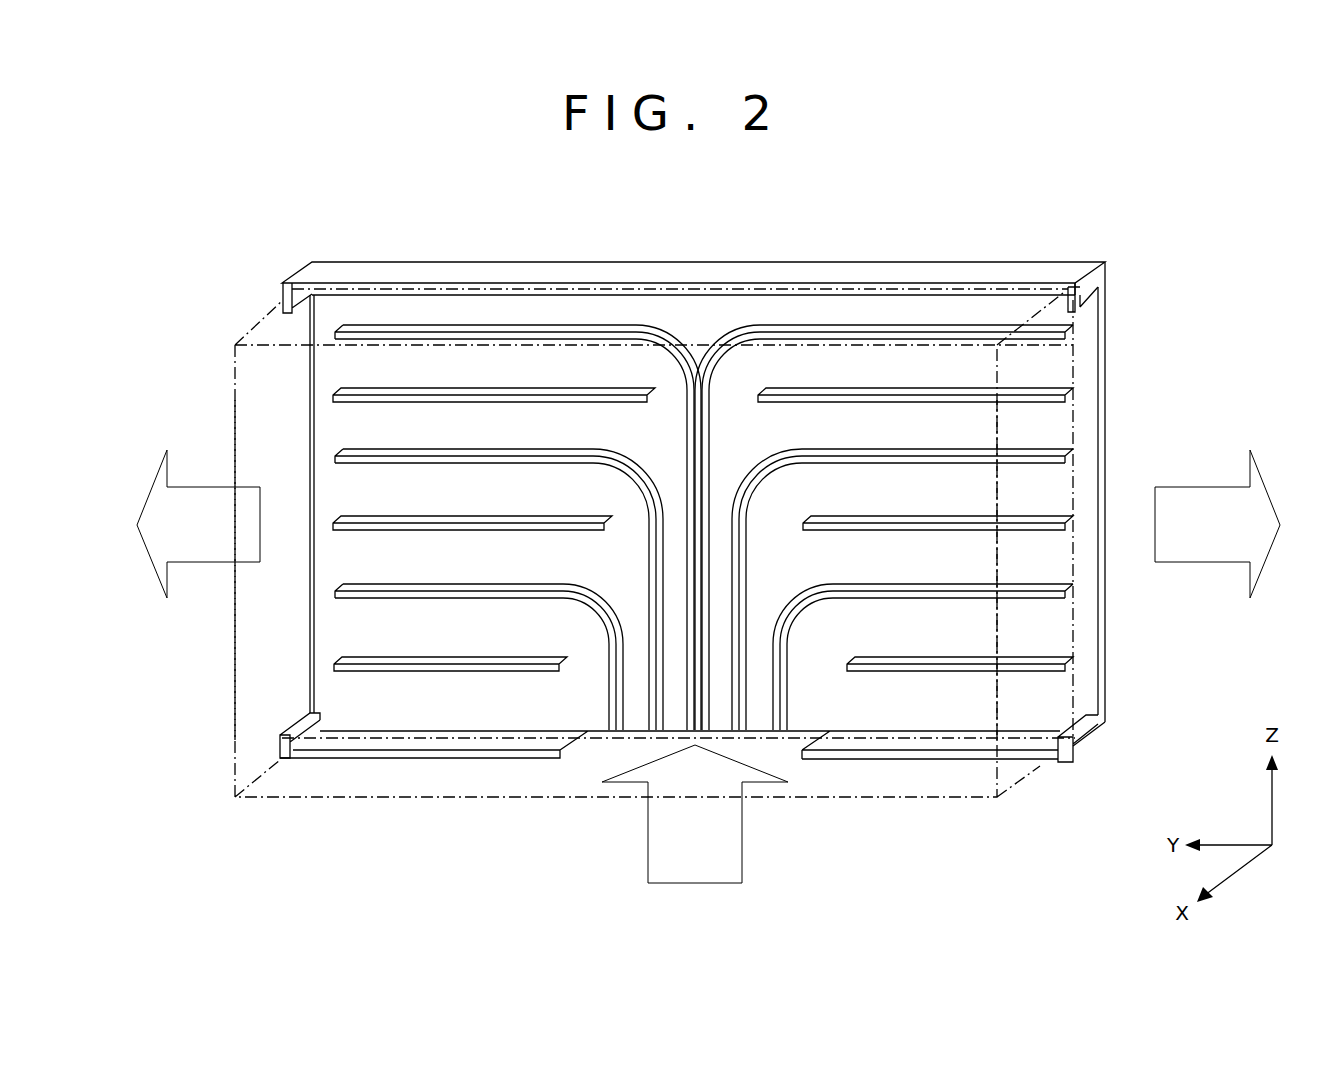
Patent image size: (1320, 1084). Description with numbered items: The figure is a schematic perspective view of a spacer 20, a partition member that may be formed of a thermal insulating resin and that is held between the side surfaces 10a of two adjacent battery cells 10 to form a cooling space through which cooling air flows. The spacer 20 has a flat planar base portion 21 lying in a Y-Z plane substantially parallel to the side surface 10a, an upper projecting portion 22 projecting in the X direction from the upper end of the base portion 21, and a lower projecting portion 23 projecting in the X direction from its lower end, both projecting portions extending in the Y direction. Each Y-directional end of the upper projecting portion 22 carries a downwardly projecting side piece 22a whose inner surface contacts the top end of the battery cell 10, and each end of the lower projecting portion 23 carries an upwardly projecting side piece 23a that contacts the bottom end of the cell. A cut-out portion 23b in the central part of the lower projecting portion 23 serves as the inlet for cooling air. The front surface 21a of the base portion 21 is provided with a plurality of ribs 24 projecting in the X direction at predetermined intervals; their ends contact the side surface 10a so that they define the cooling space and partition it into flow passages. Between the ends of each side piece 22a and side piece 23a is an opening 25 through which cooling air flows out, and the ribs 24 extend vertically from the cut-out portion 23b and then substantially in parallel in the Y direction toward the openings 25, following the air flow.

The battery cell 10 is at (335, 800).
The side surface 10a is at (295, 780).
The spacer 20 is at (380, 257).
The base portion 21 is at (1103, 325).
The front surface 21a is at (1088, 362).
The upper projecting portion 22 is at (696, 275).
The side piece 22a is at (283, 300).
The lower projecting portion 23 is at (468, 757).
The side piece 23a is at (283, 740).
The cut-out portion 23b is at (593, 752).
The rib 24 is at (455, 339).
The opening 25 is at (309, 412).